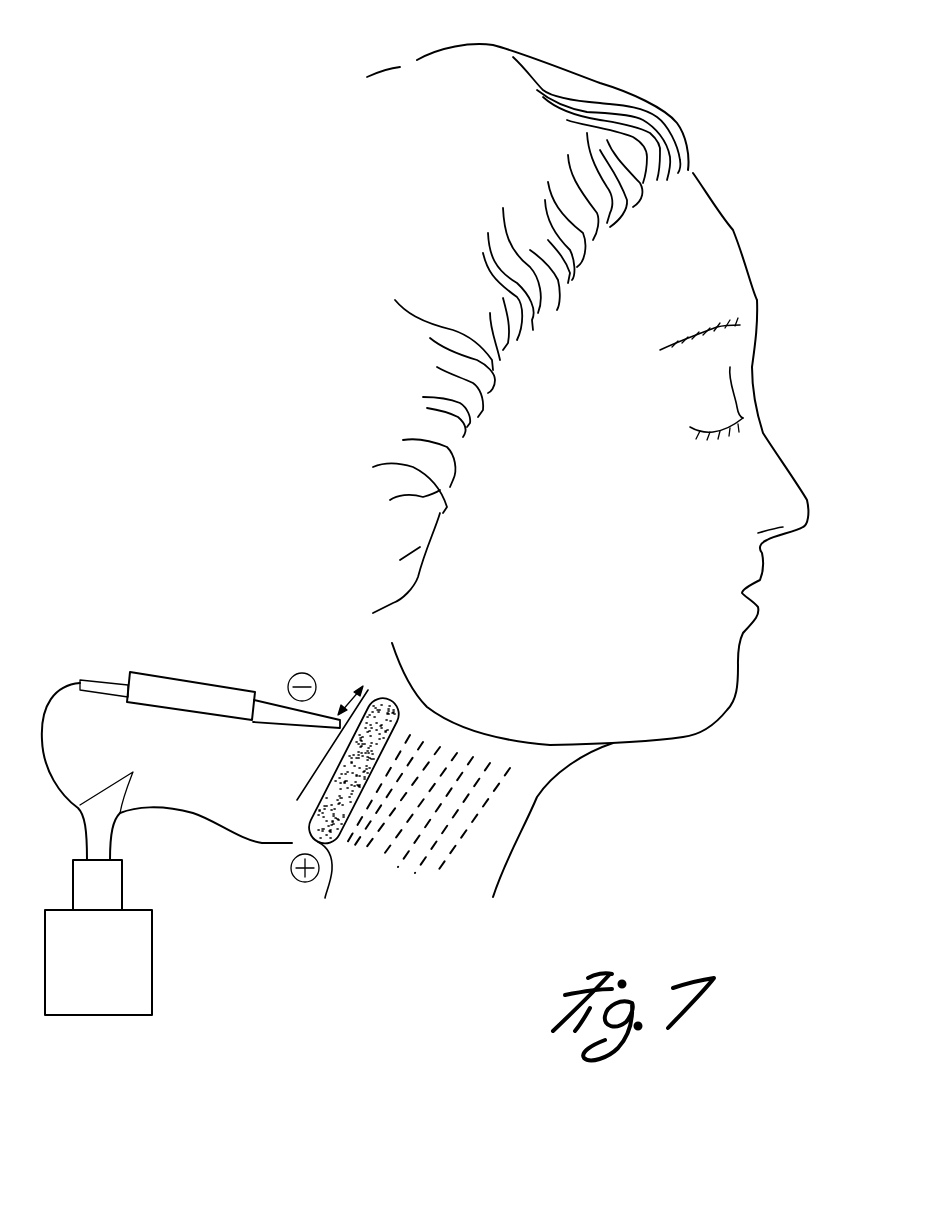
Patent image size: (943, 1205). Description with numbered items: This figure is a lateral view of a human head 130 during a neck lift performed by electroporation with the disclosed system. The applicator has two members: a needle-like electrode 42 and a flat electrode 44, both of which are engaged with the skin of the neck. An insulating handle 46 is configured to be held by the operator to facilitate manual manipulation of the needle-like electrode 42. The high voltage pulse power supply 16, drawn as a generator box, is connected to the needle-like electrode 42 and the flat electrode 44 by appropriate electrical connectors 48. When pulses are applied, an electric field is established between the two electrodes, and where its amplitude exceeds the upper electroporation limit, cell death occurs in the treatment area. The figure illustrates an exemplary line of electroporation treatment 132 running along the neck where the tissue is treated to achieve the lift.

The human head 130 is at (737, 147).
The insulating handle 46 is at (160, 673).
The needle-like electrode 42 is at (270, 697).
The line of electroporation treatment 132 is at (320, 753).
The electrical connectors 48 is at (137, 768).
The flat electrode 44 is at (327, 885).
The high voltage pulse power supply 16 is at (152, 975).